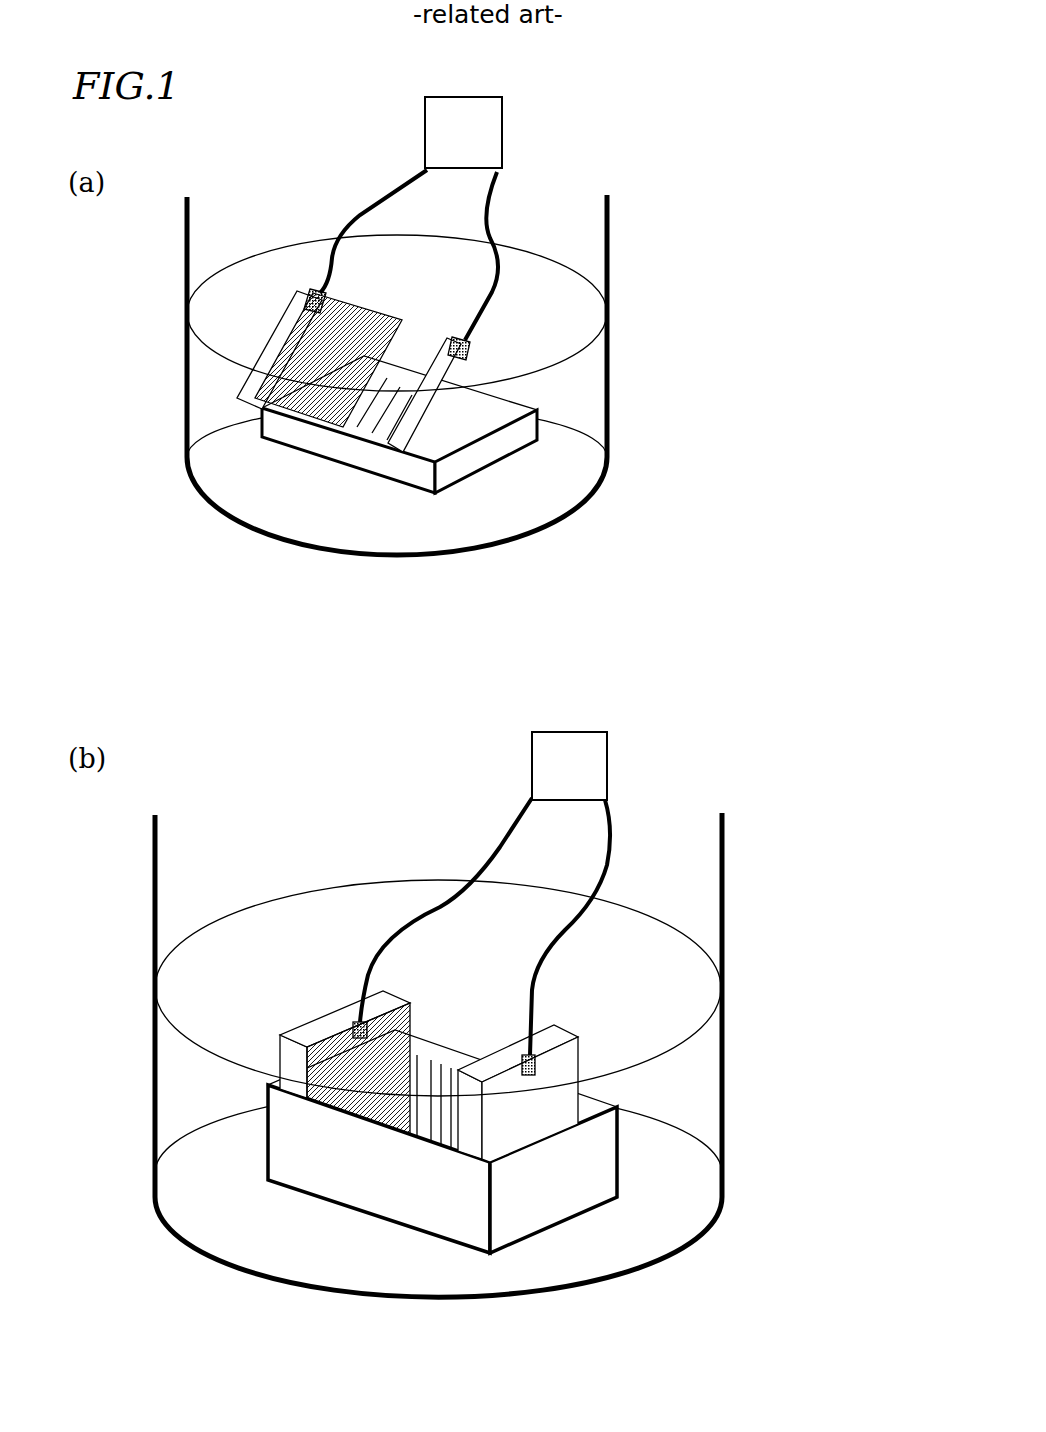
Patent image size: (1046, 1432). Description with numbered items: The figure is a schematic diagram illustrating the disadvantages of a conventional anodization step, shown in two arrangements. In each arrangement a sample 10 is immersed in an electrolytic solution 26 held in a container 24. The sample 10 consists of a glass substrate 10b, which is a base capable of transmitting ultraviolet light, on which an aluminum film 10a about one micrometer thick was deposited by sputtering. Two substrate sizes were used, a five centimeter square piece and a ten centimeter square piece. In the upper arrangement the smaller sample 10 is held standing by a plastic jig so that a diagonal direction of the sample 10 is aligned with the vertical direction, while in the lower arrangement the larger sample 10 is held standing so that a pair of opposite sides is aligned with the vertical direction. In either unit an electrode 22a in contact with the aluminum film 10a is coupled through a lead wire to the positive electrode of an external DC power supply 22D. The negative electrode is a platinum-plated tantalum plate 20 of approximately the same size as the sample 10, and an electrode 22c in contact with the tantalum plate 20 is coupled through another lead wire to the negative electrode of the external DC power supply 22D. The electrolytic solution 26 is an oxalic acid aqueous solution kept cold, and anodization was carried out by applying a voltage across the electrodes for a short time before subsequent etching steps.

The sample 10 is at (323, 630).
The aluminum film 10a is at (353, 310).
The glass substrate 10b is at (283, 307).
The platinum-plated tantalum plate 20 is at (513, 375).
The electrode 22a is at (300, 322).
The electrode 22c is at (473, 340).
The external DC power supply 22D is at (502, 132).
The container 24 is at (610, 243).
The electrolytic solution 26 is at (562, 290).